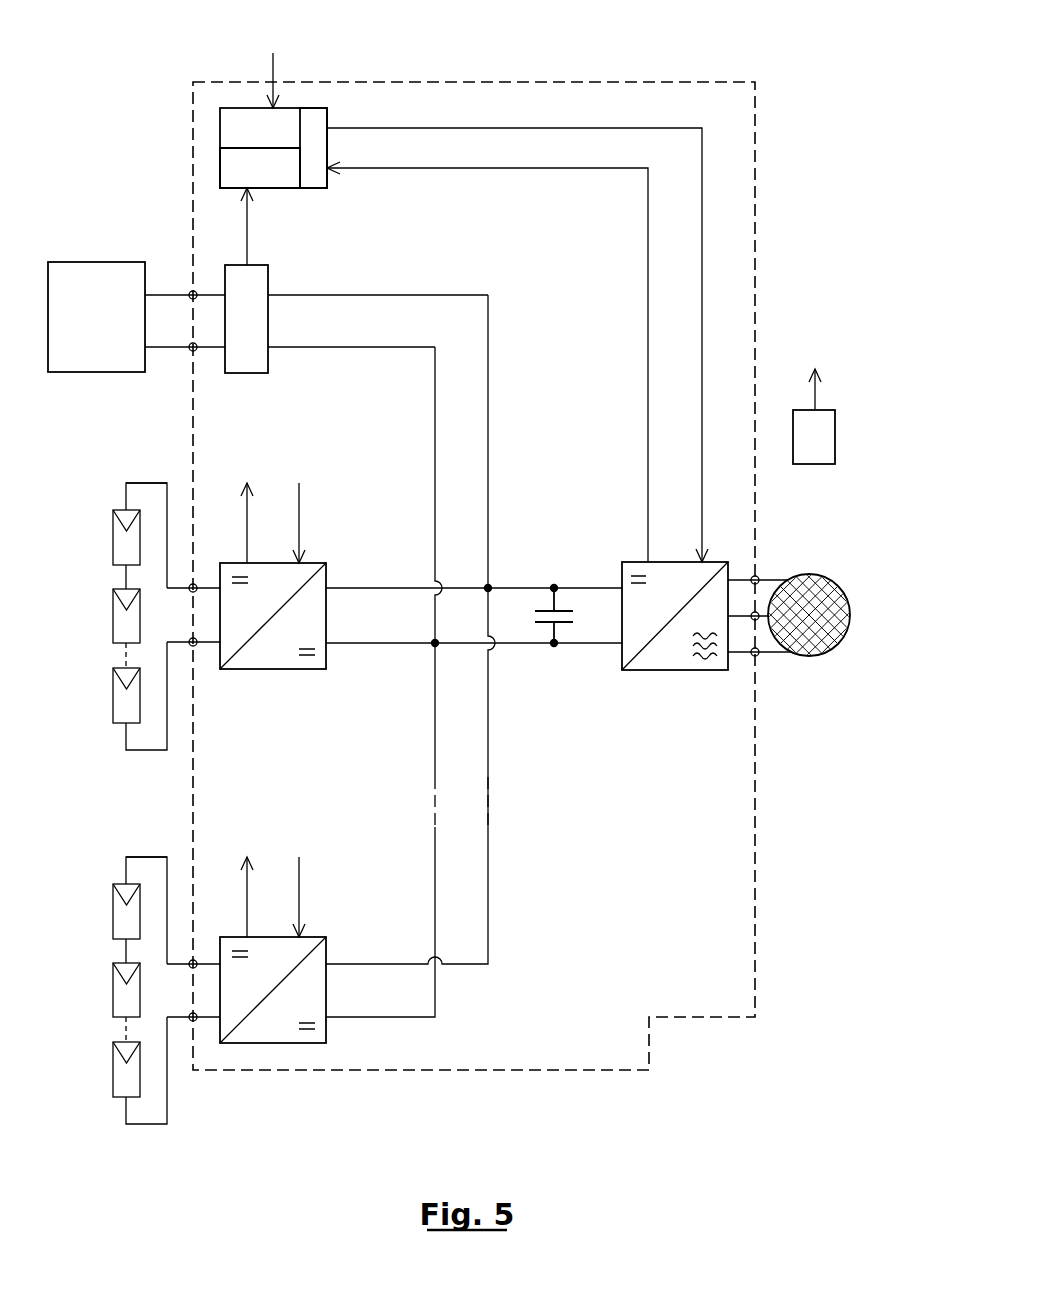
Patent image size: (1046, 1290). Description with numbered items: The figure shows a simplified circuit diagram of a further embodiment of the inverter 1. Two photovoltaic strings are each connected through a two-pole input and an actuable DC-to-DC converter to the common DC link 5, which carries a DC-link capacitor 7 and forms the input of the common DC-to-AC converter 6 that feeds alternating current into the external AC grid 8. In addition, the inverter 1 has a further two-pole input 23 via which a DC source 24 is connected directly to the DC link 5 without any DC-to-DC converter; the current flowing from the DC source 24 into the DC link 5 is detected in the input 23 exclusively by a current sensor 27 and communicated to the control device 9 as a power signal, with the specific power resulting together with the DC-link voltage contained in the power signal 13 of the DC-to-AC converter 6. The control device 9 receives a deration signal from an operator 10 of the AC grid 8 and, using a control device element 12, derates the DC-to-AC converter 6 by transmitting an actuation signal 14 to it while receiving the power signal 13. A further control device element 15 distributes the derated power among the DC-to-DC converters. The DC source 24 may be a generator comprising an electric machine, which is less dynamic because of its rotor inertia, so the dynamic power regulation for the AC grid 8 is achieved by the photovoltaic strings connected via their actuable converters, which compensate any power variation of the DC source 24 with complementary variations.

The inverter 1 is at (765, 190).
The DC link 5 is at (554, 657).
The DC-to-AC converter 6 is at (676, 672).
The DC-link capacitor 7 is at (567, 610).
The AC grid 8 is at (827, 563).
The control device 9 is at (307, 97).
The operator 10 is at (837, 437).
The control device element 12 is at (325, 108).
The power signal 13 is at (423, 167).
The actuation signal 14 is at (552, 127).
The further control device element 15 is at (220, 167).
The further two-pole input 23 is at (192, 292).
The DC source 24 is at (83, 262).
The current sensor 27 is at (255, 377).